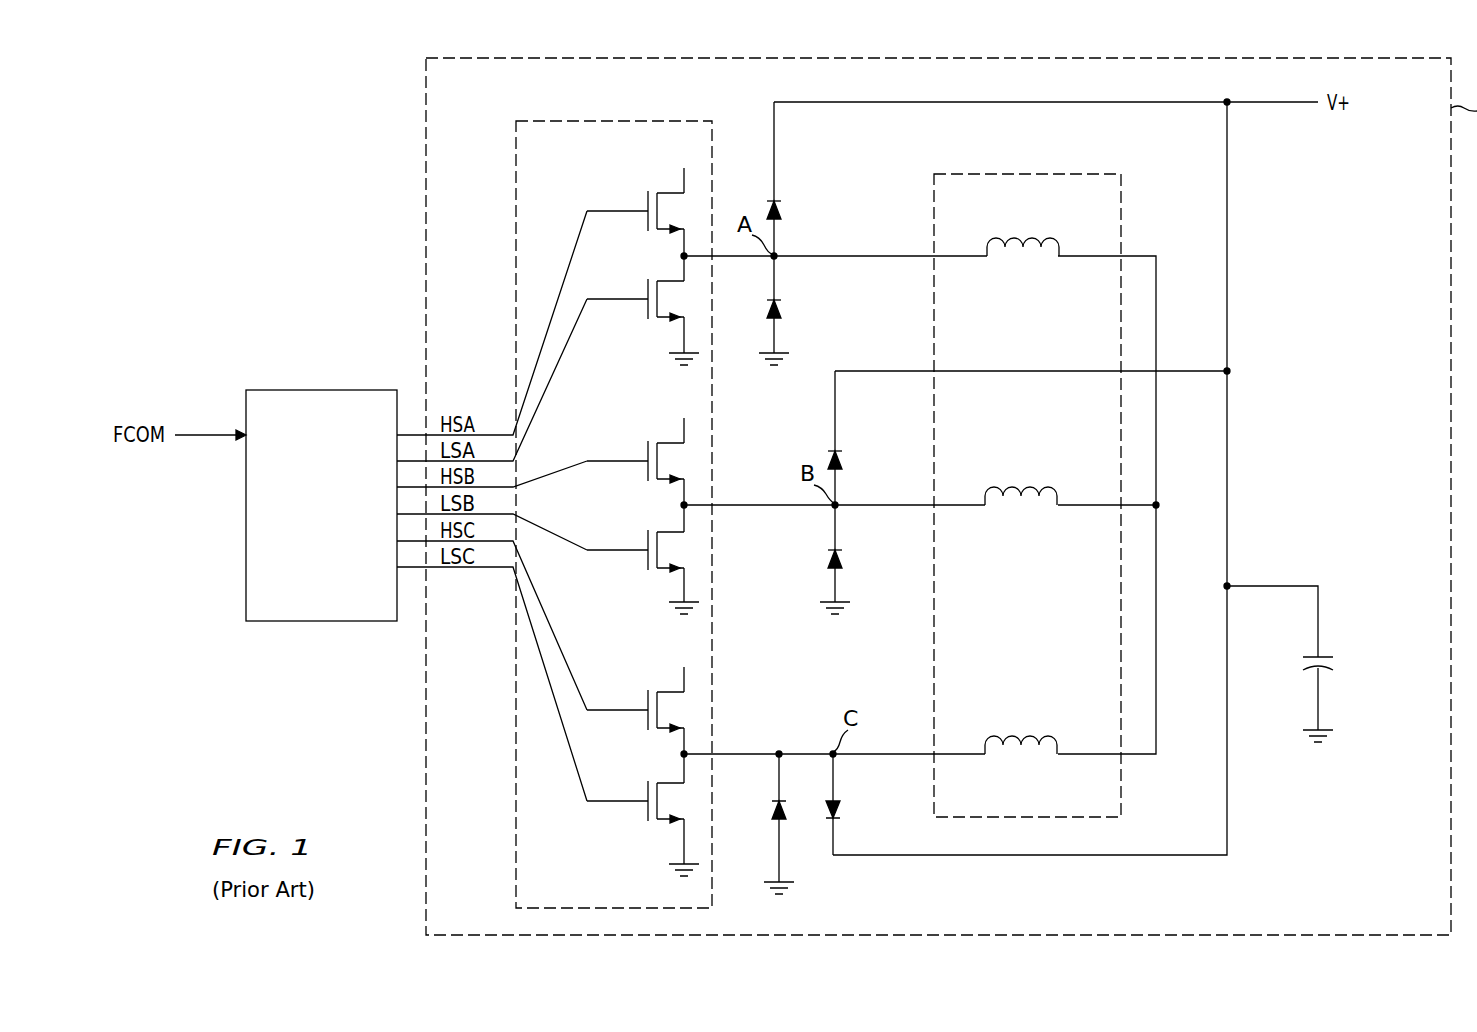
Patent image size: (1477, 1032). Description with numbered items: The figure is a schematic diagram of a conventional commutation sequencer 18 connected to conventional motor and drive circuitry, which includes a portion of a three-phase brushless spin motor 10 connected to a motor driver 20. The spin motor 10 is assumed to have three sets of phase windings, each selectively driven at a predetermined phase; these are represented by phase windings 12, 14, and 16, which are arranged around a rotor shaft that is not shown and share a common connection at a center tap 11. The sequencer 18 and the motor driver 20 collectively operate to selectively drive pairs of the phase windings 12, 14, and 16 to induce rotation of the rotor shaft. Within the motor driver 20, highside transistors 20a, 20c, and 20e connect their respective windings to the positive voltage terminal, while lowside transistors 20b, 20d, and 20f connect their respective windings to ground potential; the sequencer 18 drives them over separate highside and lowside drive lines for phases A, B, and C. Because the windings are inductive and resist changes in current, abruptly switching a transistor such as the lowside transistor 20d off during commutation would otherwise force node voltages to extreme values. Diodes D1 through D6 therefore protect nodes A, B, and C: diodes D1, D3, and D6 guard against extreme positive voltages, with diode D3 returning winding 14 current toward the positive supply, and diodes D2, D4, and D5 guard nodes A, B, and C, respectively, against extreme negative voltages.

The three-phase brushless spin motor 10 is at (1121, 210).
The center tap 11 is at (1158, 503).
The phase winding 12 is at (1014, 252).
The phase winding 14 is at (1012, 502).
The phase winding 16 is at (1012, 752).
The commutation sequencer 18 is at (366, 599).
The motor driver 20 is at (512, 852).
The highside transistor 20a is at (635, 210).
The lowside transistor 20b is at (635, 298).
The highside transistor 20c is at (635, 460).
The lowside transistor 20d is at (635, 549).
The highside transistor 20e is at (635, 709).
The lowside transistor 20f is at (635, 800).
The diode D1 is at (783, 214).
The diode D2 is at (783, 312).
The diode D3 is at (844, 464).
The diode D4 is at (844, 562).
The diode D5 is at (771, 813).
The diode D6 is at (844, 808).